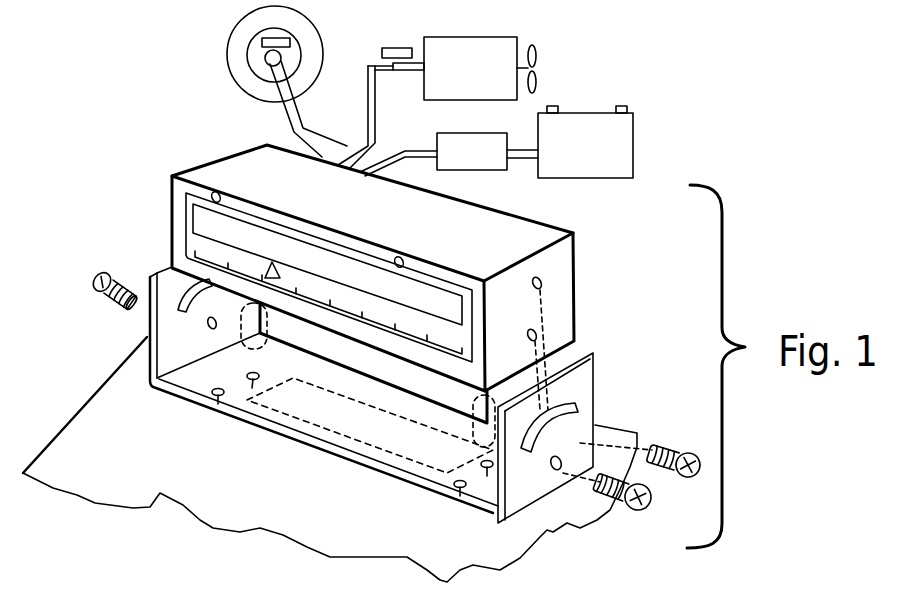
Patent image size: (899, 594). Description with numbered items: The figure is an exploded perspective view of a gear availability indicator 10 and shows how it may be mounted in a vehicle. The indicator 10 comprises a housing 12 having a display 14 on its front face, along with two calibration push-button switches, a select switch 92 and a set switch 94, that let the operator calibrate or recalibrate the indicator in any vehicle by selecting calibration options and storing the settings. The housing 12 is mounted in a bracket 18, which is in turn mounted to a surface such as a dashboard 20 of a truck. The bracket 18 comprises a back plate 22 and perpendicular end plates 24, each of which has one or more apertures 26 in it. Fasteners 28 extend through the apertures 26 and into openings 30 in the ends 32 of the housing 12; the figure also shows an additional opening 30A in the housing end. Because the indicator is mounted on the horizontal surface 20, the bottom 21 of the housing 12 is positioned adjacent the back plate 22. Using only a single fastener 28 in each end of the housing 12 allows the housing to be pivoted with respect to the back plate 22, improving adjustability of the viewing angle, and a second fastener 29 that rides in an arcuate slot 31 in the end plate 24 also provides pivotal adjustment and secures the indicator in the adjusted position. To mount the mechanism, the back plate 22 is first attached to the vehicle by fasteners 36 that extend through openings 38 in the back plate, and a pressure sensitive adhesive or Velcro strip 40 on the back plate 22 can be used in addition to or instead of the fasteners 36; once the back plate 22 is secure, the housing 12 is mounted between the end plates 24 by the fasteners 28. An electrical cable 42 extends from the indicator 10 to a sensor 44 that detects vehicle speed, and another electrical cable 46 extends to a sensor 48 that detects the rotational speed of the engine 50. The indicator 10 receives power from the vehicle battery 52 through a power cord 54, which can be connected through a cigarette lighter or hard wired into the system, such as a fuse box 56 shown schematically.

The gear availability indicator 10 is at (152, 157).
The housing 12 is at (172, 200).
The display 14 is at (186, 230).
The bracket 18 is at (110, 344).
The dashboard 20 is at (547, 531).
The bottom 21 is at (355, 341).
The back plate 22 is at (423, 453).
The end plates 24 is at (148, 300).
The apertures 26 is at (207, 328).
The fasteners 28 is at (94, 274).
The second fastener 29 is at (683, 446).
The openings 30 is at (545, 334).
The hole in side wall 30A is at (533, 281).
The arcuate slot 31 is at (540, 420).
The ends 32 is at (220, 160).
The fasteners 36 is at (262, 323).
The openings 38 is at (252, 386).
The adhesive strip 40 is at (318, 452).
The electrical cable 42 is at (303, 118).
The sensor 44 is at (292, 44).
The electrical cable 46 is at (375, 138).
The sensor 48 is at (396, 47).
The engine 50 is at (478, 37).
The vehicle battery 52 is at (588, 110).
The power cord 54 is at (413, 156).
The fuse box 56 is at (503, 172).
The select switch 92 is at (222, 196).
The set switch 94 is at (402, 258).